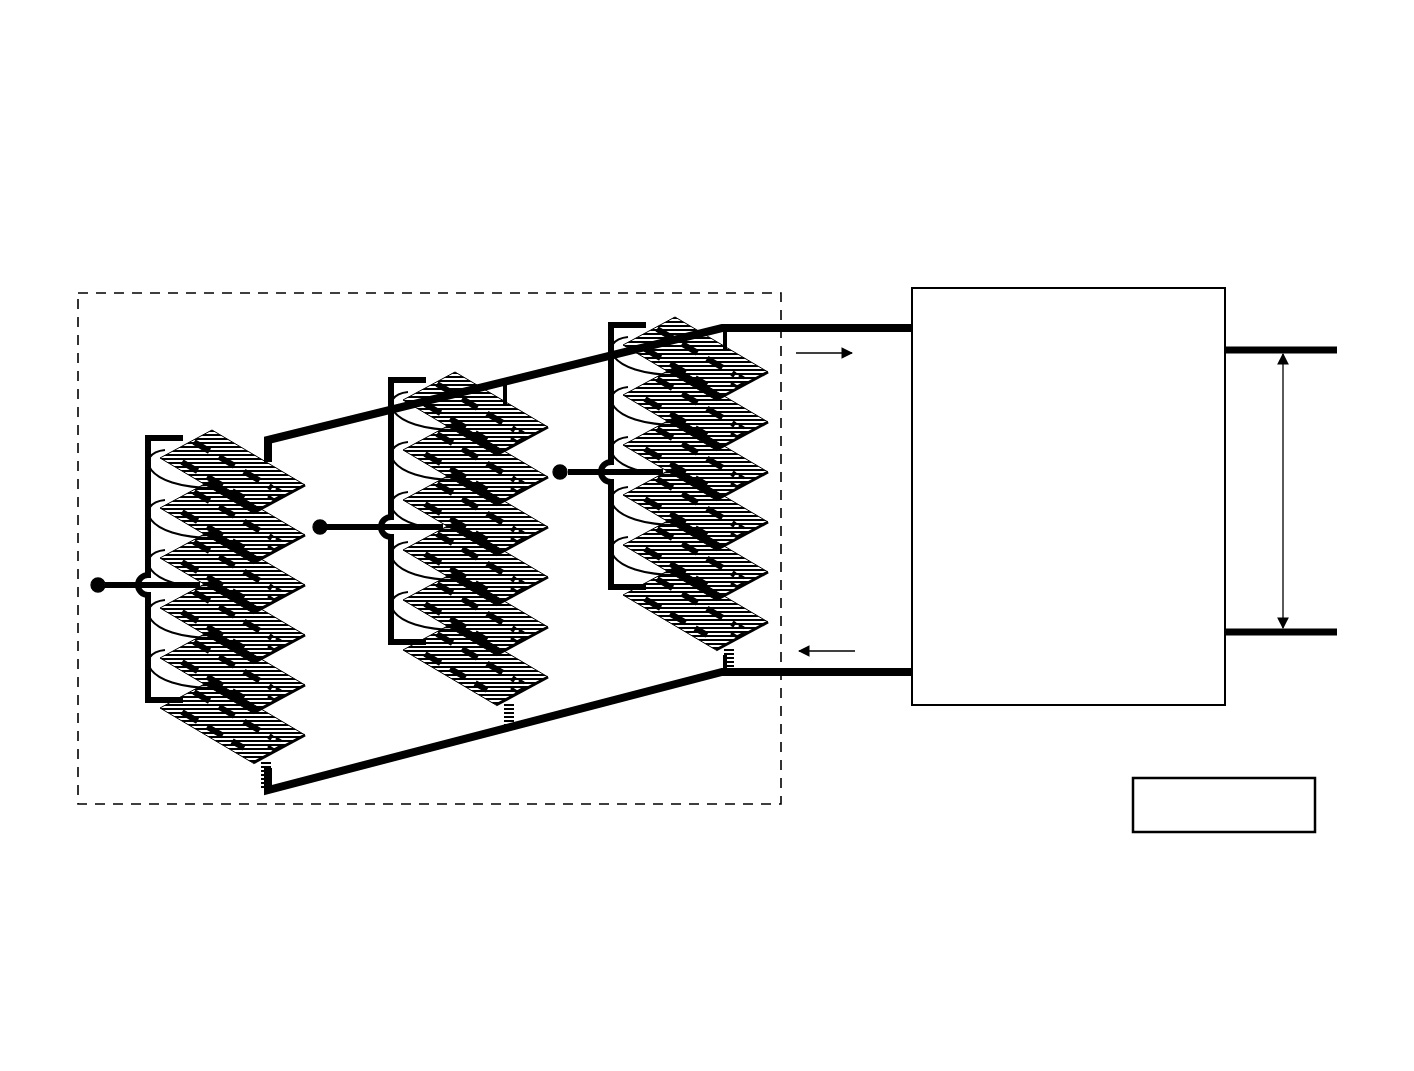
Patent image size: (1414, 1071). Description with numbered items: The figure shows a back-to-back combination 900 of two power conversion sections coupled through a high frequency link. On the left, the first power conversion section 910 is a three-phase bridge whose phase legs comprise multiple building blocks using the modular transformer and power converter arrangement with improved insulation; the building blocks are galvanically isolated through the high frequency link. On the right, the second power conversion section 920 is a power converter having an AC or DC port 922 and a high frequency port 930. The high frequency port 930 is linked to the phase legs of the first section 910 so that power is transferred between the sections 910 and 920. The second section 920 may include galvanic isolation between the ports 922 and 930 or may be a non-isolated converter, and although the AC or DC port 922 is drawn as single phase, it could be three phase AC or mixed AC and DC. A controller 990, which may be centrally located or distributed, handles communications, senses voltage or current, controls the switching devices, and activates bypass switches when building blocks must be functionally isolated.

The back-to-back combination 900 is at (780, 158).
The power conversion section 910 is at (368, 290).
The power conversion section 920 is at (1085, 287).
The AC or DC port 922 is at (1292, 530).
The high frequency port 930 is at (842, 318).
The controller 990 is at (1320, 803).